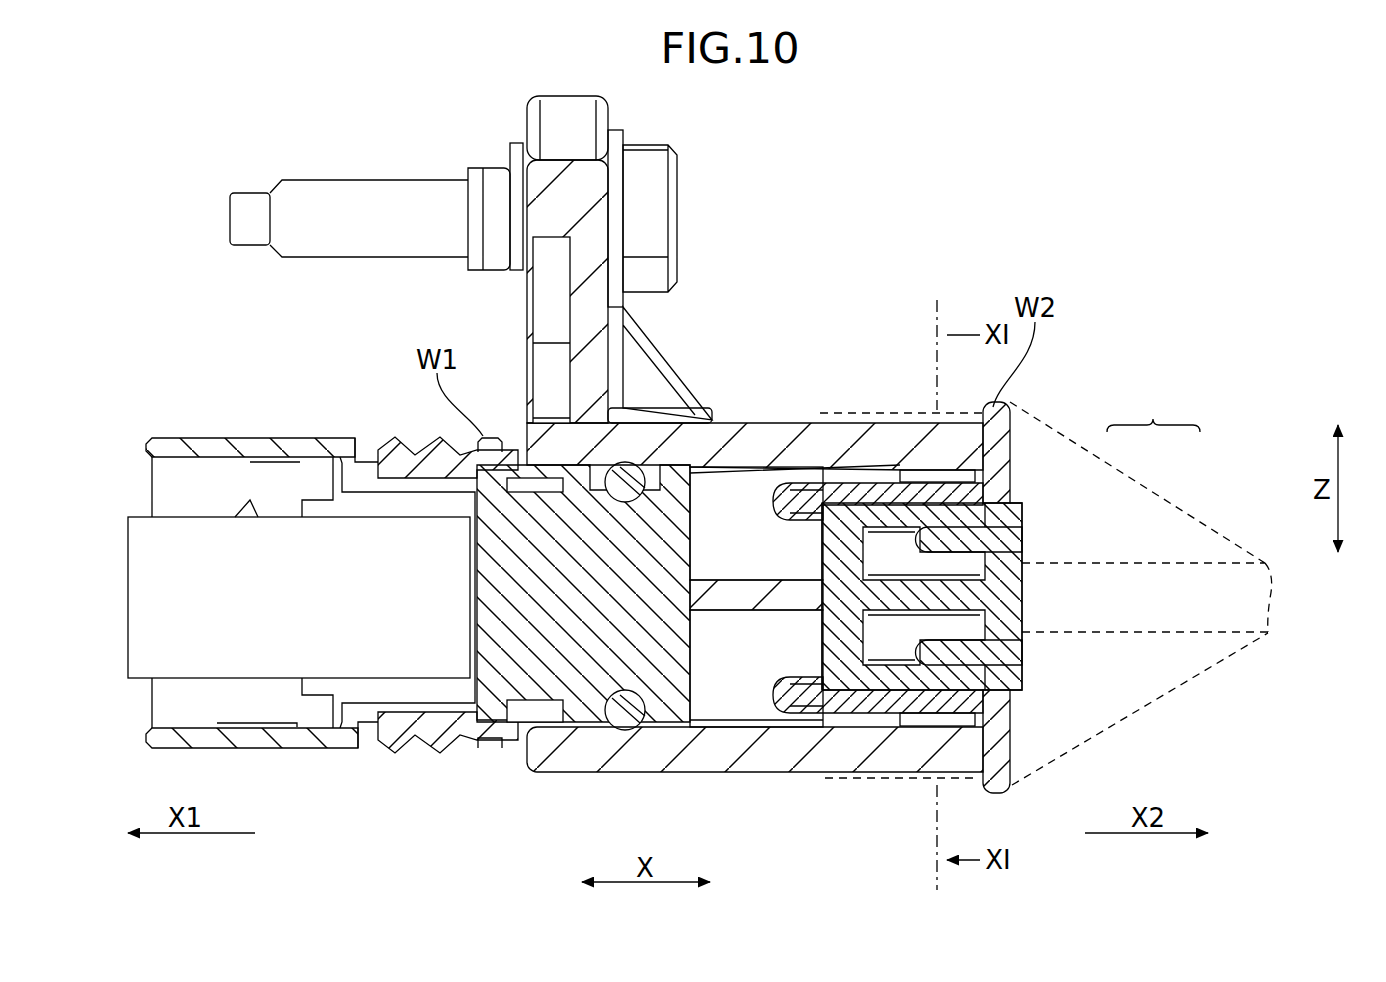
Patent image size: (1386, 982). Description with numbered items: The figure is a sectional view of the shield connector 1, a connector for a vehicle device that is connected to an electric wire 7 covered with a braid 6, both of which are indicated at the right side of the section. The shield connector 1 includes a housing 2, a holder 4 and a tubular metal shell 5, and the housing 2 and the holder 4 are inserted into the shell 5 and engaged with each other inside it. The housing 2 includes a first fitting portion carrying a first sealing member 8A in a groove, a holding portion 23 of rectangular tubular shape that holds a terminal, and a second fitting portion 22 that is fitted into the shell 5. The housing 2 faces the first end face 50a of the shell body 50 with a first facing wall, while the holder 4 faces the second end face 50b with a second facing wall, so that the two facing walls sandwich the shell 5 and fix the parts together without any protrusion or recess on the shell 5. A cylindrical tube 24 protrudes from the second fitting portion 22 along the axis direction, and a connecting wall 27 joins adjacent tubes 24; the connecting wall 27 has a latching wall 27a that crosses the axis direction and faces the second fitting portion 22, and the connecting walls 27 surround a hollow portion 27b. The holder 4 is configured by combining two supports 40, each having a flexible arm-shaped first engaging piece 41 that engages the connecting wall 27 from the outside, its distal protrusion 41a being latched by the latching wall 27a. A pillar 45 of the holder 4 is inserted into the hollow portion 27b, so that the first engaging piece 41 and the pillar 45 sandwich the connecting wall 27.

The shield connector 1 is at (802, 176).
The housing 2 is at (246, 434).
The holder 4 is at (1153, 410).
The shell 5 is at (677, 327).
The braid 6 is at (1218, 563).
The electric wire 7 is at (1222, 565).
The first sealing member 8A is at (408, 453).
The second fitting portion 22 is at (586, 462).
The holding portion 23 is at (184, 507).
The tube 24 is at (930, 462).
The connecting wall 27 is at (807, 835).
The latching wall 27a is at (822, 546).
The hollow portion 27b is at (952, 567).
The support 40 is at (1034, 505).
The first engaging piece 41 is at (862, 800).
The protrusion 41a is at (806, 482).
The pillar 45 is at (942, 506).
The housing 50 is at (709, 424).
The first end face 50a is at (510, 437).
The second end face 50b is at (1032, 410).